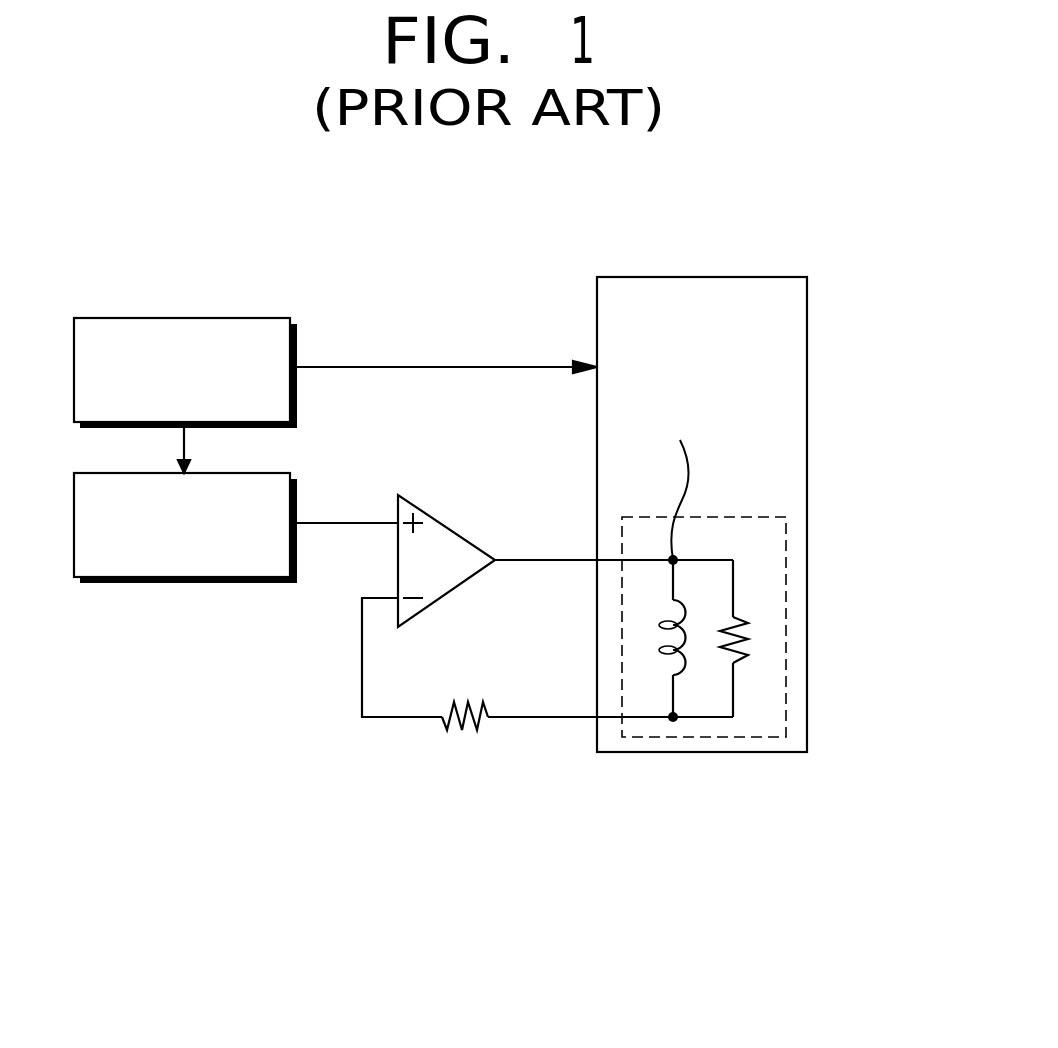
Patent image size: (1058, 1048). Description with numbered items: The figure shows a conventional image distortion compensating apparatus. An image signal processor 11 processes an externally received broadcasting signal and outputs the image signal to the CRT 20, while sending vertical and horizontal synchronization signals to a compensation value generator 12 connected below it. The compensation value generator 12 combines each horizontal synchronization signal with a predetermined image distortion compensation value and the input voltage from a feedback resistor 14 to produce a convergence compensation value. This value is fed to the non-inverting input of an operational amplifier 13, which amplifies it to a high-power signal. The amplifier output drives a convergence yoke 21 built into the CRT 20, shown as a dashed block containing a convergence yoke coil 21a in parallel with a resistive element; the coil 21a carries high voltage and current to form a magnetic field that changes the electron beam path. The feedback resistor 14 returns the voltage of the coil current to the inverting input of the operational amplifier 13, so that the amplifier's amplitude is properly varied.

The image signal processor 11 is at (193, 318).
The compensation value generator 12 is at (200, 585).
The operational amplifier 13 is at (448, 527).
The feedback resistor 14 is at (453, 730).
The CRT 20 is at (703, 277).
The convergence yoke 21 is at (737, 517).
The convergence yoke coil 21a is at (662, 640).